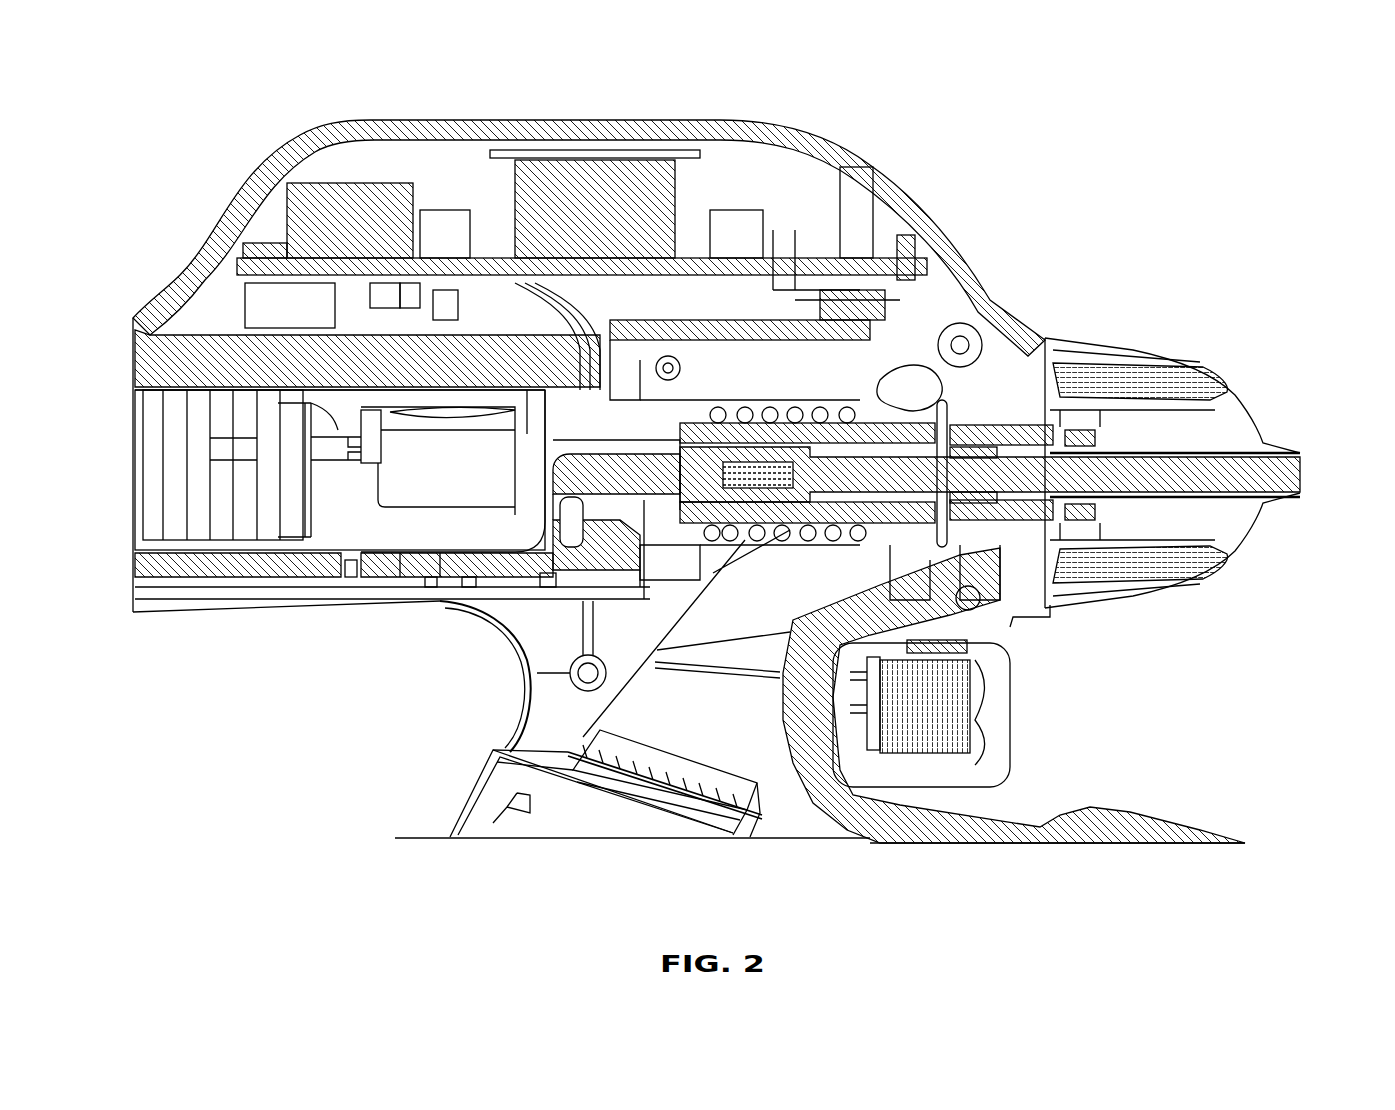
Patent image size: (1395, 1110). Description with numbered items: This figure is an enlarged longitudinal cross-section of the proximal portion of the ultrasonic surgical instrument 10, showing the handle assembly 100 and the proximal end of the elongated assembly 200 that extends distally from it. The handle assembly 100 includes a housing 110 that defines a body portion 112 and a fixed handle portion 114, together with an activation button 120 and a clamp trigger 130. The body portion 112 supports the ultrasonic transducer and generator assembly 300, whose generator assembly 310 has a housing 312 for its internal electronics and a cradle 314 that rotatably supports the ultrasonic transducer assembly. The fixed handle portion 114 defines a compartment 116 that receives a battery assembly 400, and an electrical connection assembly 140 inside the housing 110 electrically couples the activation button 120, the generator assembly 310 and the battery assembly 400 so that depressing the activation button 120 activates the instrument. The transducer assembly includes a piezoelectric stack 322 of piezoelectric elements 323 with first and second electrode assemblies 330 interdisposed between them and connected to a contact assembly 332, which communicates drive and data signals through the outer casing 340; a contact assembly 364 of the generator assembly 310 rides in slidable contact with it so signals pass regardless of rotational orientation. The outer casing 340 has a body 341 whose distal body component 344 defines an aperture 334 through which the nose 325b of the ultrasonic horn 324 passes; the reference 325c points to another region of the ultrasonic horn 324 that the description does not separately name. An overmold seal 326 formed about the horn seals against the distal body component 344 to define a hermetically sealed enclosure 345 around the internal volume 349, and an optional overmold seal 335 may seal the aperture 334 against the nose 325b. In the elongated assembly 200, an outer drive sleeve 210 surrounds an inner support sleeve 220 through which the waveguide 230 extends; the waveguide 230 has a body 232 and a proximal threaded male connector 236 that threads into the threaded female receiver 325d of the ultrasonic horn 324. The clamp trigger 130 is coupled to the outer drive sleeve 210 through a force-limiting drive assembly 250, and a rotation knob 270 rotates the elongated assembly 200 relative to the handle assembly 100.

The ultrasonic surgical instrument 10 is at (1188, 207).
The handle assembly 100 is at (138, 258).
The housing 110 is at (520, 690).
The body portion 112 is at (985, 290).
The fixed handle portion 114 is at (462, 808).
The compartment 116 is at (505, 775).
The activation button 120 is at (1000, 710).
The clamp trigger 130 is at (1120, 805).
The electrical connection assembly 140 is at (747, 760).
The elongated assembly 200 is at (1236, 343).
The outer drive sleeve 210 is at (1275, 500).
The inner support sleeve 220 is at (1030, 400).
The waveguide 230 is at (1300, 470).
The body 232 is at (1290, 458).
The proximal threaded male connector 236 is at (848, 380).
The drive assembly 250 is at (905, 270).
The rotation knob 270 is at (1140, 368).
The ultrasonic transducer and generator assembly 300 is at (726, 103).
The generator assembly 310 is at (570, 106).
The housing 312 is at (455, 118).
The cradle 314 is at (170, 600).
The piezoelectric stack 322 is at (195, 475).
The piezoelectric elements 323 is at (267, 525).
The ultrasonic horn 324 is at (330, 505).
The nose 325b is at (700, 400).
The circuit board 325c is at (740, 430).
The threaded female receiver 325d is at (760, 470).
The overmold seal 326 is at (370, 430).
The first and second electrode assemblies 330 is at (230, 440).
The contact assembly 332 is at (465, 330).
The aperture 334 is at (560, 527).
The overmold seal 335 is at (612, 560).
The outer casing 340 is at (195, 560).
The body 341 is at (325, 330).
The distal body component 344 is at (564, 524).
The hermetically sealed enclosure 345 is at (391, 487).
The internal volume 349 is at (425, 533).
The contact assembly 364 is at (573, 463).
The battery assembly 400 is at (520, 838).